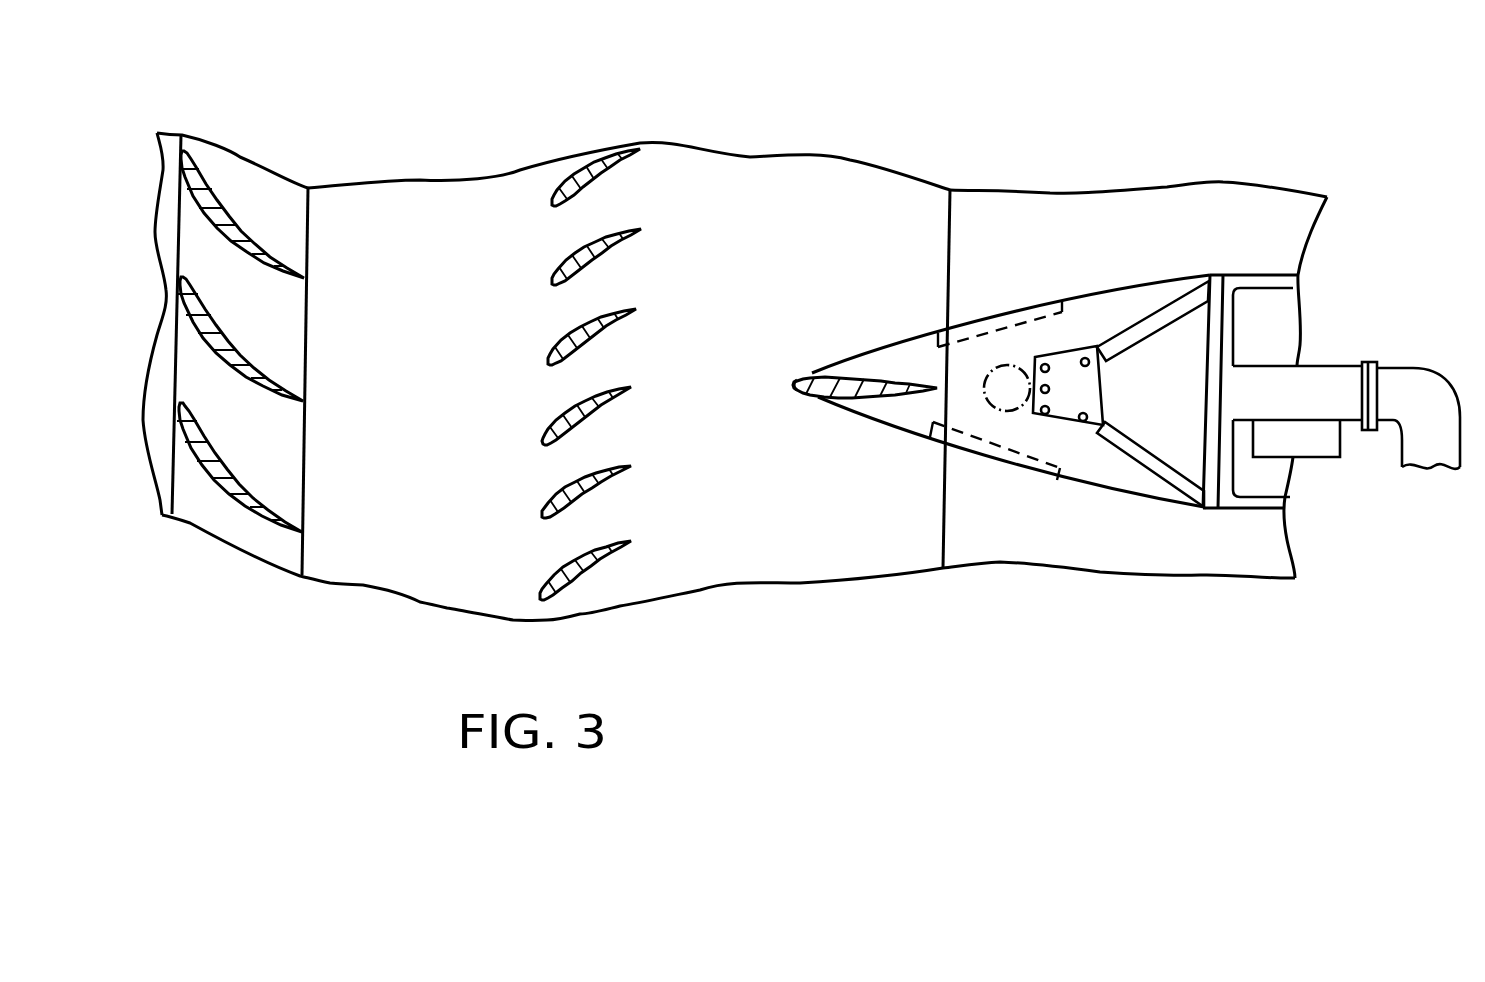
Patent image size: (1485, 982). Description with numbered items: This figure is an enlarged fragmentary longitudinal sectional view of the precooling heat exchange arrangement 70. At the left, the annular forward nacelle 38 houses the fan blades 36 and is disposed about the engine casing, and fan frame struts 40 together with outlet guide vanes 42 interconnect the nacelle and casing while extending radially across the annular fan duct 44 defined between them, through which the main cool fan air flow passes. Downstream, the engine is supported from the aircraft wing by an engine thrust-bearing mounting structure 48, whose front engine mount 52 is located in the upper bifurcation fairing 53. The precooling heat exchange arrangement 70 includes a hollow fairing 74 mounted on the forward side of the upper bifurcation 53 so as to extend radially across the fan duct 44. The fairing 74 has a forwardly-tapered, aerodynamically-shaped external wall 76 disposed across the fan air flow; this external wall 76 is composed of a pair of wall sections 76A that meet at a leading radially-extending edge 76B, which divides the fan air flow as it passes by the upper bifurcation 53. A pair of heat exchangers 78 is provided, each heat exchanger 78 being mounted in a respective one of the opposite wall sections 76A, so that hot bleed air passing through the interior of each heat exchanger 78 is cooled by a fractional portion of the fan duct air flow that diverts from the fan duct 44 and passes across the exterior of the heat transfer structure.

The fan blades 36 is at (275, 248).
The forward nacelle 38 is at (393, 566).
The fan frame struts 40 is at (817, 398).
The outlet guide vanes 42 is at (610, 231).
The annular fan duct 44 is at (697, 293).
The engine thrust-bearing mounting structure 48 is at (1235, 340).
The front engine mount 52 is at (1067, 380).
The upper bifurcation fairing 53 is at (1253, 272).
The precooling heat exchange arrangement 70 is at (948, 399).
The hollow fairing 74 is at (1067, 290).
The external wall 76 is at (878, 346).
The wall sections 76A is at (938, 328).
The leading radially-extending edge 76B is at (793, 384).
The heat exchangers 78 is at (935, 297).